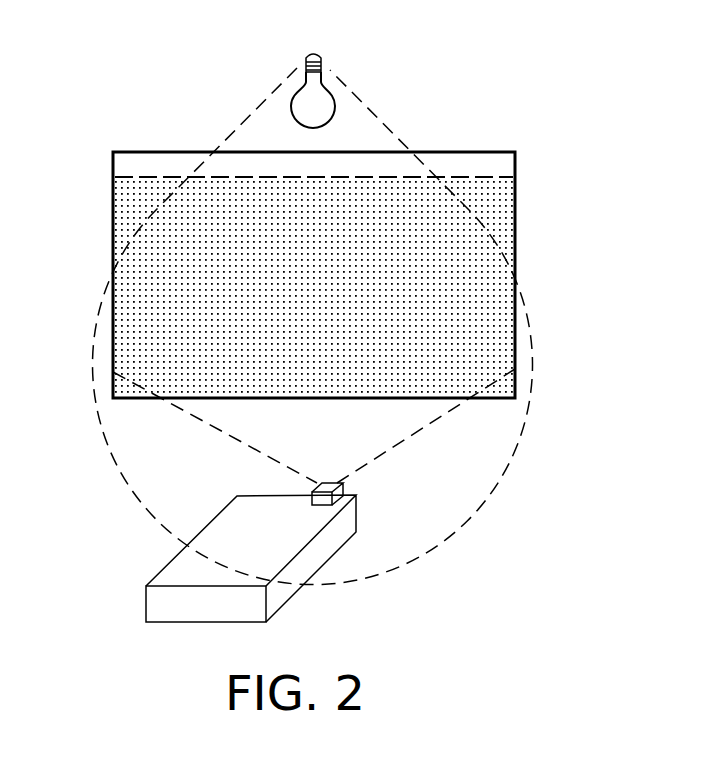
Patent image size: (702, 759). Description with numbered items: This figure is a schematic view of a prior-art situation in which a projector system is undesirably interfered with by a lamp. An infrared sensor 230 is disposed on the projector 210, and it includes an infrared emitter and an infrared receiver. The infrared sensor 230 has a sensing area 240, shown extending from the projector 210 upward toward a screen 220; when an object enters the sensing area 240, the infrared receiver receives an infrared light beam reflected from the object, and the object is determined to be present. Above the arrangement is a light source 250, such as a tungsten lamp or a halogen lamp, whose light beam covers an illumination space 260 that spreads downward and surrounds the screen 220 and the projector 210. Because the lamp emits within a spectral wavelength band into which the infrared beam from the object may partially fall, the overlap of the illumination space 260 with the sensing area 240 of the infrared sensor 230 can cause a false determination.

The projector 210 is at (147, 603).
The display screen 220 is at (515, 220).
The infrared sensor 230 is at (340, 487).
The sensing area 240 is at (390, 431).
The light source 250 is at (322, 59).
The illumination space 260 is at (388, 533).